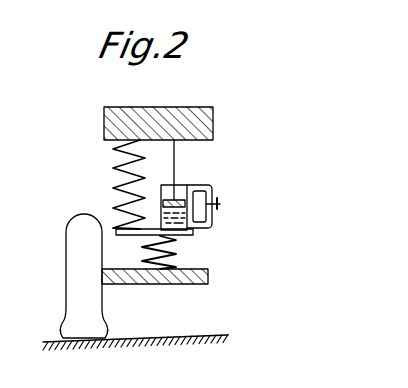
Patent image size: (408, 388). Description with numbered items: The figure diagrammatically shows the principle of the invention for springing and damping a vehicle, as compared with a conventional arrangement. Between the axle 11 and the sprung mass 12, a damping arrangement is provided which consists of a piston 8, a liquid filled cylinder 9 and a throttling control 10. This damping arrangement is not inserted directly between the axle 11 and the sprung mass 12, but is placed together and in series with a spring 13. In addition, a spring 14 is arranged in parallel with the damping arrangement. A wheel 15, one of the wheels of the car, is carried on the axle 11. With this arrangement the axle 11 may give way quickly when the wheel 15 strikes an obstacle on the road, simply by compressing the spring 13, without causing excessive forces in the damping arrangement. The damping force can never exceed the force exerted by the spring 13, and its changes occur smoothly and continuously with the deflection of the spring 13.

The piston 8 is at (179, 197).
The liquid filled cylinder 9 is at (207, 219).
The throttling control 10 is at (219, 203).
The axle 11 is at (197, 285).
The sprung mass 12 is at (214, 121).
The spring 13 is at (176, 249).
The spring 14 is at (113, 166).
The wheel 15 is at (66, 258).